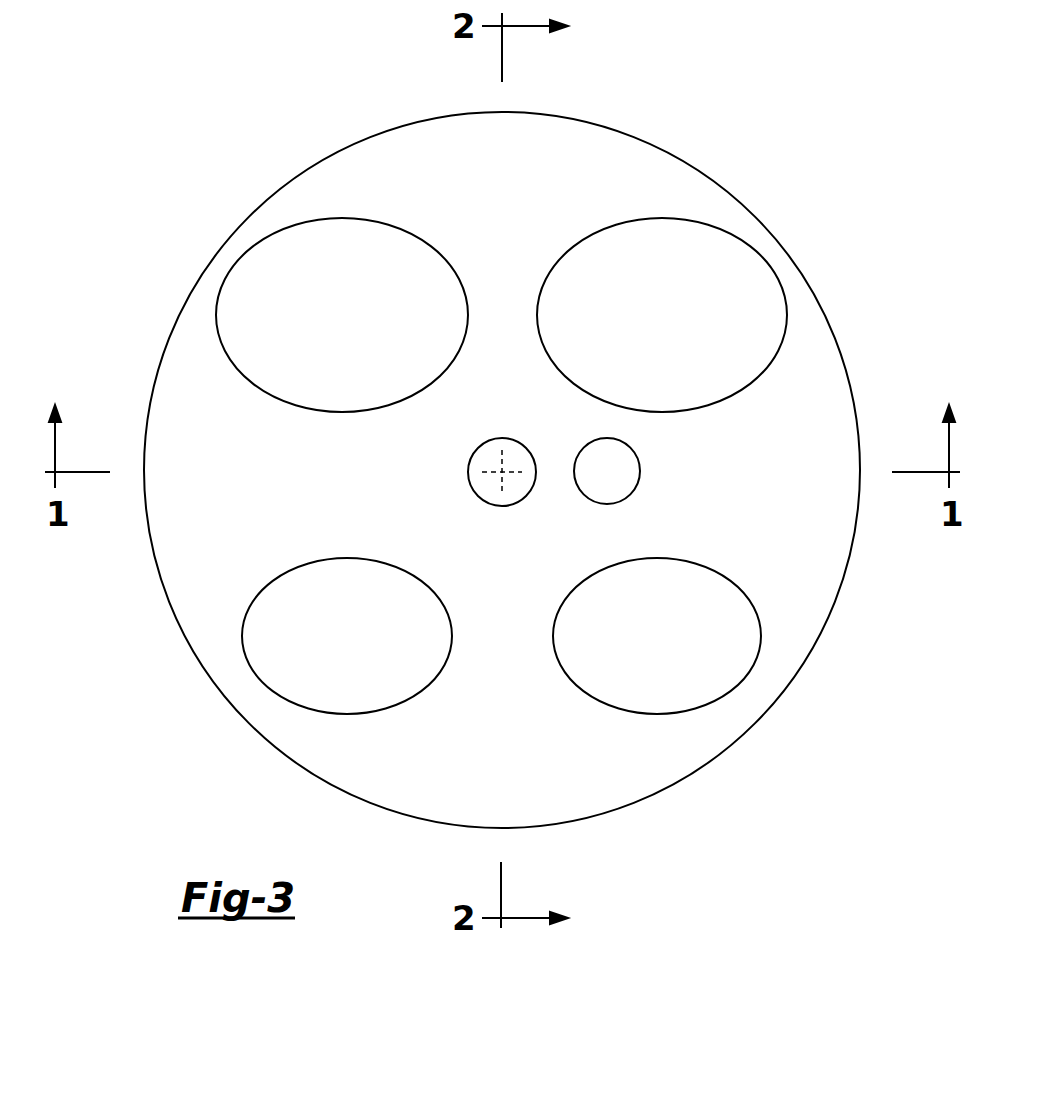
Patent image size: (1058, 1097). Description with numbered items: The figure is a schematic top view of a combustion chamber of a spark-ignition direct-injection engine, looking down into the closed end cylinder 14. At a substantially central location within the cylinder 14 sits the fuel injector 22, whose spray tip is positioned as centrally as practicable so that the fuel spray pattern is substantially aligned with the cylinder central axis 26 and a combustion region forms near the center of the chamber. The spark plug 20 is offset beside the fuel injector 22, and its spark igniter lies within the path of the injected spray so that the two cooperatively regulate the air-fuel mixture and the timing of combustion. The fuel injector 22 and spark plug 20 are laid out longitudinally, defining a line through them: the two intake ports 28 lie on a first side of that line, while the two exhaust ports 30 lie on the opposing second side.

The closed end cylinder 14 is at (638, 140).
The spark plug 20 is at (620, 500).
The fuel injector 22 is at (485, 441).
The cylinder central axis 26 is at (502, 472).
The intake ports 28 is at (297, 567).
The exhaust ports 30 is at (312, 410).